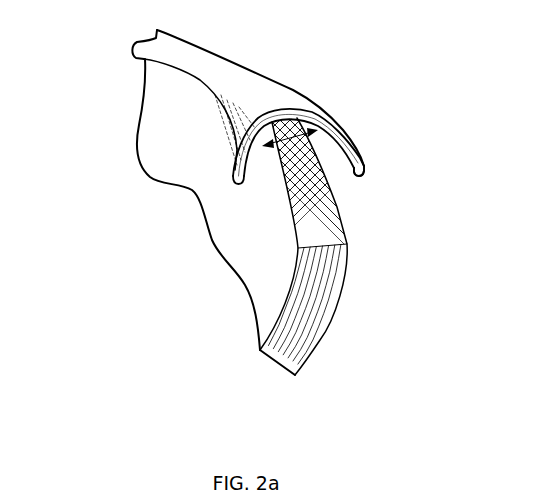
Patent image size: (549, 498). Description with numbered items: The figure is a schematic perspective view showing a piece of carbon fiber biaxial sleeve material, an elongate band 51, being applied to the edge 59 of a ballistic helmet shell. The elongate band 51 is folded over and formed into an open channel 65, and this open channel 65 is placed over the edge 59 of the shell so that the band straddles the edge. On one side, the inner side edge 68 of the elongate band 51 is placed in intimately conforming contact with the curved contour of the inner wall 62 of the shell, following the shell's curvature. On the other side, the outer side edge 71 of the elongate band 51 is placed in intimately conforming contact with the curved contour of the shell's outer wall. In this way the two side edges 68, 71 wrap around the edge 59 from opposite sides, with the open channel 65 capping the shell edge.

The elongate band 51 is at (245, 85).
The edge 59 is at (307, 340).
The inner wall 62 is at (230, 235).
The open channel 65 is at (290, 147).
The inner side edge 68 is at (233, 181).
The outer side edge 71 is at (361, 186).